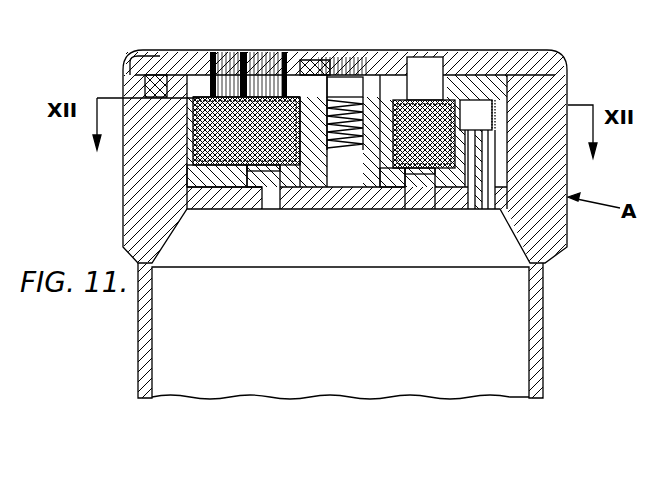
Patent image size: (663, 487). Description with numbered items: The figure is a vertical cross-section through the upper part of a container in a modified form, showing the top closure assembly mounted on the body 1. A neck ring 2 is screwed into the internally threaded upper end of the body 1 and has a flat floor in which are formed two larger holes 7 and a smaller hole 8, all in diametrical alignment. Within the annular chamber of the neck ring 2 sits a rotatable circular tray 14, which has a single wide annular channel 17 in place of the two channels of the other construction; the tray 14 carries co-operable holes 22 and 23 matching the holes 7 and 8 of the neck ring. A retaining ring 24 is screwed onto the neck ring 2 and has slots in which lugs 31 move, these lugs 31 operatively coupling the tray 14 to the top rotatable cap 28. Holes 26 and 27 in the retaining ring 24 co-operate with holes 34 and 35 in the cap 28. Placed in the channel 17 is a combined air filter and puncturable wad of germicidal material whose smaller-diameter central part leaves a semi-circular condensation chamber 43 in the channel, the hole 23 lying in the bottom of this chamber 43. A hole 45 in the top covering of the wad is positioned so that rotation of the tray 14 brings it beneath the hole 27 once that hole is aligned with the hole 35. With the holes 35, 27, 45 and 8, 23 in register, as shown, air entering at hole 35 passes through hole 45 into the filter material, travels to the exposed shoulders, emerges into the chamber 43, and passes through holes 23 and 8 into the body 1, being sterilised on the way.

The body 1 is at (538, 317).
The neck ring 2 is at (540, 193).
The larger circular holes 7 is at (262, 200).
The smaller circular hole 8 is at (483, 205).
The rotatable circular tray 14 is at (218, 182).
The annular channel 17 is at (192, 157).
The hole in tray 22 is at (265, 180).
The hole in tray 23 is at (480, 173).
The retaining ring 24 is at (322, 100).
The hole in retaining ring 26 is at (307, 73).
The hole in retaining ring 27 is at (234, 70).
The rotatable cap 28 is at (143, 62).
The lugs 31 is at (168, 92).
The hole in cap 34 is at (267, 80).
The hole in cap 35 is at (222, 82).
The condensation chamber 43 is at (480, 108).
The hole in wad covering 45 is at (213, 100).